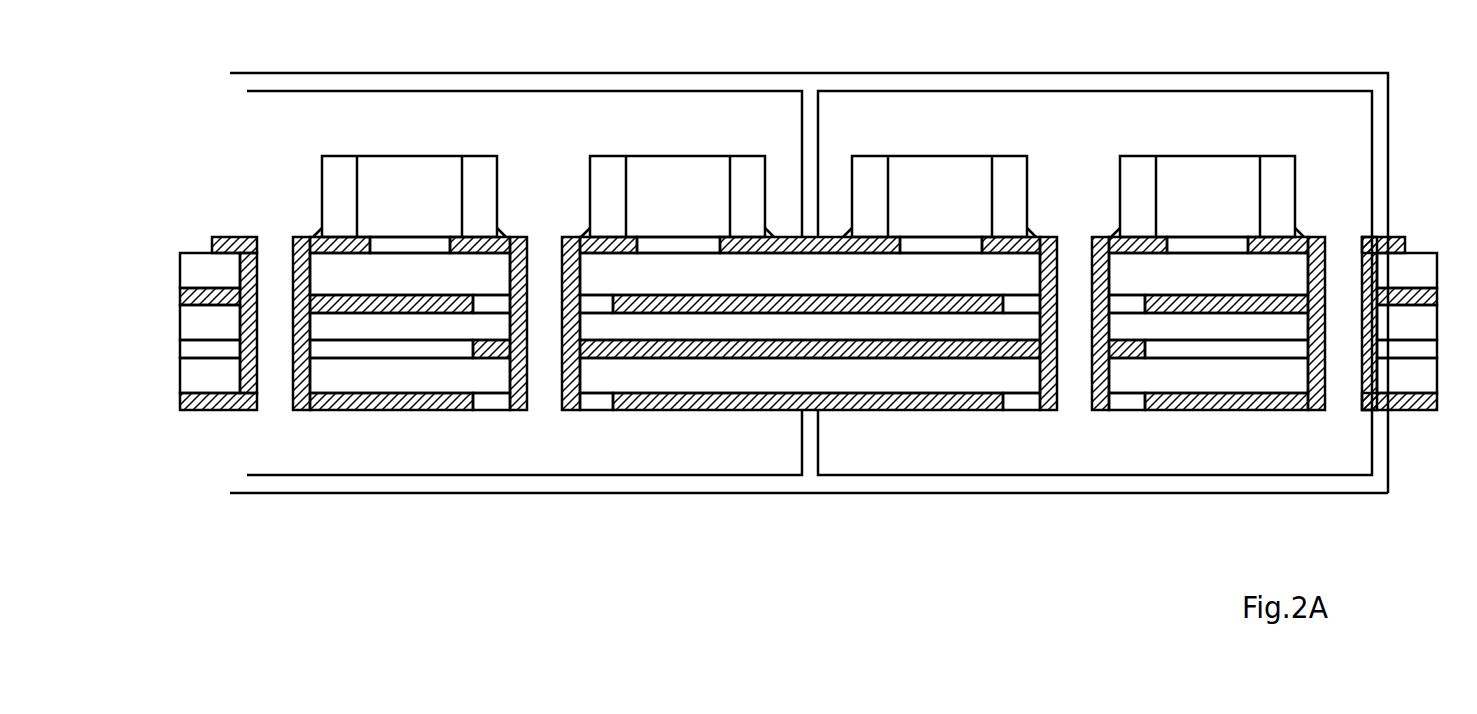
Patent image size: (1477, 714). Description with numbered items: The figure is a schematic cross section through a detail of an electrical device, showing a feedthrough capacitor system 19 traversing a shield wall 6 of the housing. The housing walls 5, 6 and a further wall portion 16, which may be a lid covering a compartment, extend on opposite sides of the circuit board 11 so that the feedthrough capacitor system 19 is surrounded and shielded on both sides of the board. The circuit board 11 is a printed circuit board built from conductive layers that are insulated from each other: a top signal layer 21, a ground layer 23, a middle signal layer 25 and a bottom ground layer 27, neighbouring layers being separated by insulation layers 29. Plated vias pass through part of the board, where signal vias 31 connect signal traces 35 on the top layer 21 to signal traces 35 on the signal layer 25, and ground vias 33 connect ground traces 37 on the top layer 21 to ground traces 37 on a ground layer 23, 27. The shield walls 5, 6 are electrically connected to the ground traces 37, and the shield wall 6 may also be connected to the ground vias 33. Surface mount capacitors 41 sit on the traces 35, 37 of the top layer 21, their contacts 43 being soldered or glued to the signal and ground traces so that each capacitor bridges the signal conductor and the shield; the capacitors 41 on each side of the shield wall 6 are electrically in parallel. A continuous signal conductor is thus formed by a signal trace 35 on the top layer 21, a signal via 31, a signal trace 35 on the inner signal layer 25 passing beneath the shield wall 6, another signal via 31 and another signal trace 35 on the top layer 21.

The wall 5 is at (1349, 82).
The shield wall 6 is at (803, 110).
The circuit board 11 is at (177, 390).
The further wall portion 16 is at (1261, 487).
The feedthrough capacitor system 19 is at (641, 113).
The top layer 21 is at (200, 240).
The ground layer 23 is at (168, 297).
The middle signal layer 25 is at (168, 350).
The bottom layer 27 is at (168, 405).
The insulation layer 29 is at (168, 270).
The signal via 31 is at (565, 390).
The ground via 33 is at (292, 405).
The signal trace 35 is at (515, 237).
The ground trace 37 is at (212, 245).
The surface mount capacitor 41 is at (383, 140).
The contact 43 is at (332, 165).